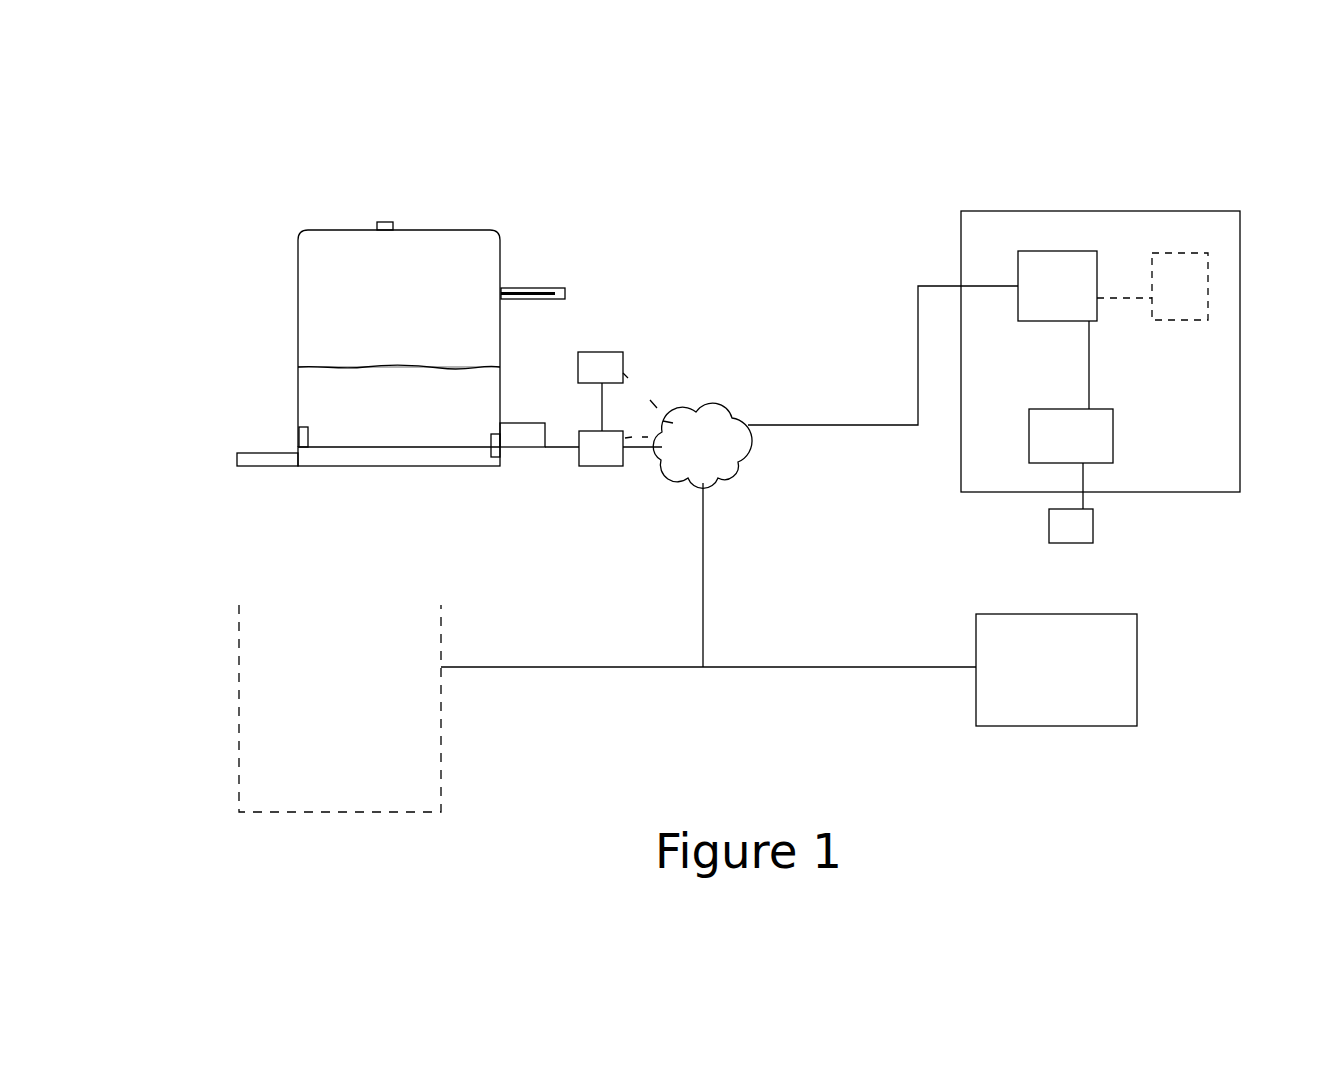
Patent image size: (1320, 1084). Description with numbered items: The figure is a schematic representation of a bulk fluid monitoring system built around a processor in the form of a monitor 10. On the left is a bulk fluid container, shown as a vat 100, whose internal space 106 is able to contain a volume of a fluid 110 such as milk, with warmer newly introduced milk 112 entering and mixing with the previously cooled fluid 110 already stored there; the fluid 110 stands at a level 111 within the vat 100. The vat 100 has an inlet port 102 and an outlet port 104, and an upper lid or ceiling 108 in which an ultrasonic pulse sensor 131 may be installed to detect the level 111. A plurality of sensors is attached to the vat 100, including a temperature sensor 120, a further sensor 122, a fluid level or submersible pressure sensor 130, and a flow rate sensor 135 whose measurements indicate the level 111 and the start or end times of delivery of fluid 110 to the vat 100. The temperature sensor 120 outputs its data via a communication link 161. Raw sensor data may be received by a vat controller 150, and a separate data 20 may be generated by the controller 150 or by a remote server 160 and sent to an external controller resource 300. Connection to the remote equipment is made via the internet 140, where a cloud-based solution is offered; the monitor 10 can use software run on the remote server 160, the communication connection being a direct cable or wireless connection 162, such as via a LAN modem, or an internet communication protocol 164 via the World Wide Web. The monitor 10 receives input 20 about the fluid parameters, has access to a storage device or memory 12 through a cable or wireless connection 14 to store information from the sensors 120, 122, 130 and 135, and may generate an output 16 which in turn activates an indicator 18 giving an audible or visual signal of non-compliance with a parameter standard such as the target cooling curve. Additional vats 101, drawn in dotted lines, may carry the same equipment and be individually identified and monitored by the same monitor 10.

The vat 100 is at (298, 224).
The additional vat 101 is at (240, 693).
The inlet port 102 is at (533, 268).
The outlet port 104 is at (300, 453).
The internal space 106 is at (396, 306).
The upper lid or ceiling 108 is at (487, 227).
The fluid 110 is at (340, 387).
The fluid level 111 is at (347, 365).
The newly introduced milk 112 is at (458, 323).
The temperature sensor 120 is at (493, 437).
The sensor 122 is at (302, 430).
The fluid level sensor 130 is at (485, 458).
The ultrasonic pulse sensor 131 is at (383, 220).
The flow rate sensor 135 is at (540, 285).
The internet 140 is at (728, 466).
The vat controller 150 is at (600, 467).
The remote server 160 is at (604, 352).
The communication link 161 is at (550, 447).
The direct cable or wireless connection 162 is at (600, 410).
The internet communication protocol 164 is at (917, 357).
The monitor 10 is at (1044, 251).
The storage device 12 is at (1198, 253).
The cable or wireless connection 14 is at (1127, 297).
The output 16 is at (1113, 435).
The indicator 18 is at (1048, 525).
The input 20 is at (932, 287).
The external controller resource 300 is at (1057, 726).